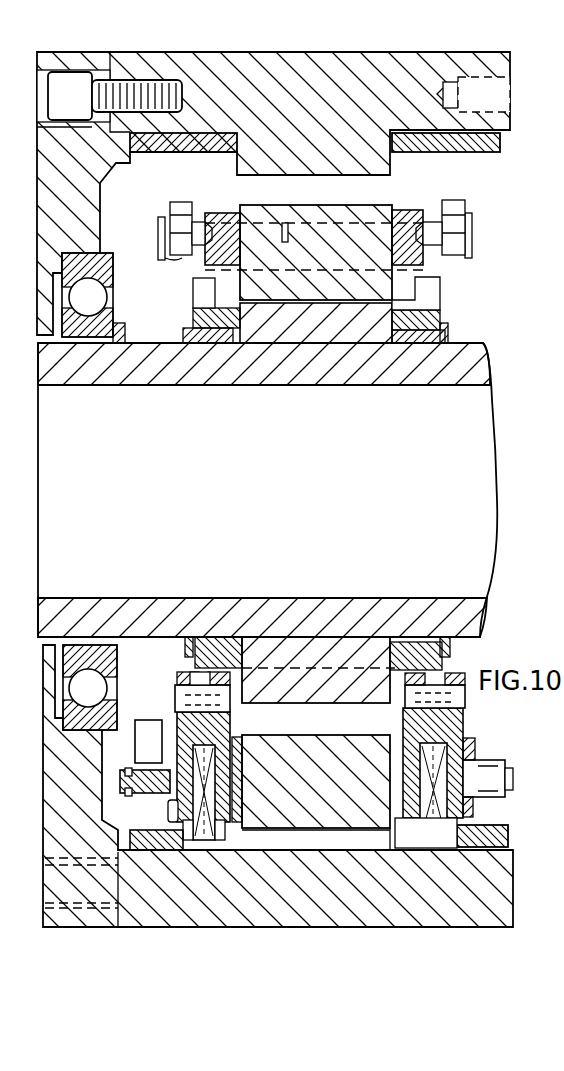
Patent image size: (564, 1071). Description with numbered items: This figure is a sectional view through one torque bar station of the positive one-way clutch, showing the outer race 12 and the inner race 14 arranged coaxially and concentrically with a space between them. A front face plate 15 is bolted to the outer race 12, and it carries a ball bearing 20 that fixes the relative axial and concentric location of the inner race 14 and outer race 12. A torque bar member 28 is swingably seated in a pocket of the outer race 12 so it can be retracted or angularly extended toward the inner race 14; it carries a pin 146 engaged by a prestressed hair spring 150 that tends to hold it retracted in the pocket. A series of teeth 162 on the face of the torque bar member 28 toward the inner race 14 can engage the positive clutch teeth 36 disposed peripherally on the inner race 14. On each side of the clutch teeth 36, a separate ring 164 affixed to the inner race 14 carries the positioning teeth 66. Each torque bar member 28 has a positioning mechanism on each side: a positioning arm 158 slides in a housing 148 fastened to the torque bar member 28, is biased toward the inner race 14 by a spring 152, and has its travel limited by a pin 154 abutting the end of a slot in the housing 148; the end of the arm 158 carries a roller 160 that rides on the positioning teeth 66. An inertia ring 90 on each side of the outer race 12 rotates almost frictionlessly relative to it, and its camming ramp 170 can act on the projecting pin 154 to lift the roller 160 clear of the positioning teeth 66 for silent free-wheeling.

The outer race 12 is at (297, 64).
The inner race 14 is at (76, 387).
The front face plate 15 is at (98, 62).
The ball bearing 20 is at (140, 275).
The torque bar member 28 is at (250, 210).
The positive clutch teeth 36 is at (333, 686).
The positioning tooth 66 is at (433, 290).
The inertia ring 90 is at (218, 136).
The pin 146 is at (157, 240).
The housing 148 is at (430, 262).
The hair spring 150 is at (185, 260).
The spring 152 is at (450, 742).
The pin 154 is at (120, 784).
The positioning arm 158 is at (173, 720).
The roller 160 is at (197, 672).
The teeth 162 is at (303, 304).
The ring 164 is at (193, 317).
The camming ramp 170 is at (140, 758).